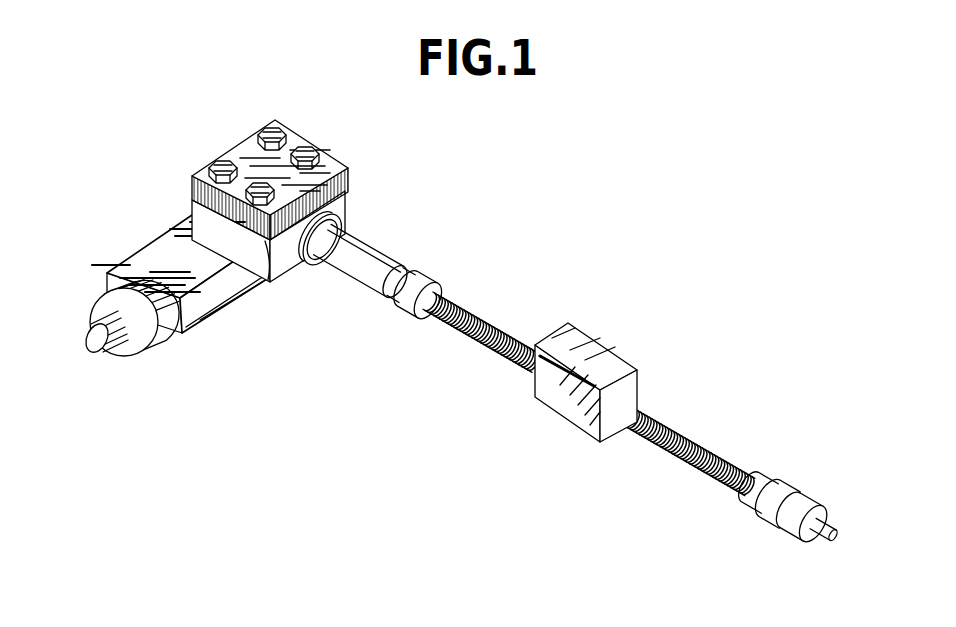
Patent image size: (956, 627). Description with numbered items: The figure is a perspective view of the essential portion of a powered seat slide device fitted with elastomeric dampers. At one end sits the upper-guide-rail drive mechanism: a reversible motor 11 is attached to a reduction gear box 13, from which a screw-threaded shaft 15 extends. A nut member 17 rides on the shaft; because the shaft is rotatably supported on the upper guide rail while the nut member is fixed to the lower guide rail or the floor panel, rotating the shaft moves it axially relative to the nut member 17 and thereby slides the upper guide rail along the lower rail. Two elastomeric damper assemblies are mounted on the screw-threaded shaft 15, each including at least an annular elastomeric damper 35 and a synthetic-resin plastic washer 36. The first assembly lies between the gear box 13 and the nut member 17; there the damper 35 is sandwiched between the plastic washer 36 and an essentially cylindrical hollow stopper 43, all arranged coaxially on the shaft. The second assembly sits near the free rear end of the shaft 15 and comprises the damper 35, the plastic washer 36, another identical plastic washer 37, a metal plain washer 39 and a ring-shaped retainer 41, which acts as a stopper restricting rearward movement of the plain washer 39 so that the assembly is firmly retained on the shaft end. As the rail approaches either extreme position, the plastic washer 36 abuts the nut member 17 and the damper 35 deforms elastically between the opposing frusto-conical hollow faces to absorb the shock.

The reversible motor 11 is at (165, 250).
The reduction gear box 13 is at (283, 260).
The screw-threaded shaft 15 is at (472, 340).
The nut member 17 is at (557, 415).
The elastomeric damper 35 is at (415, 270).
The plastic washer 36 is at (432, 277).
The plastic washer 37 is at (797, 492).
The metal plain washer 39 is at (787, 532).
The retainer 41 is at (798, 540).
The stopper 43 is at (367, 240).